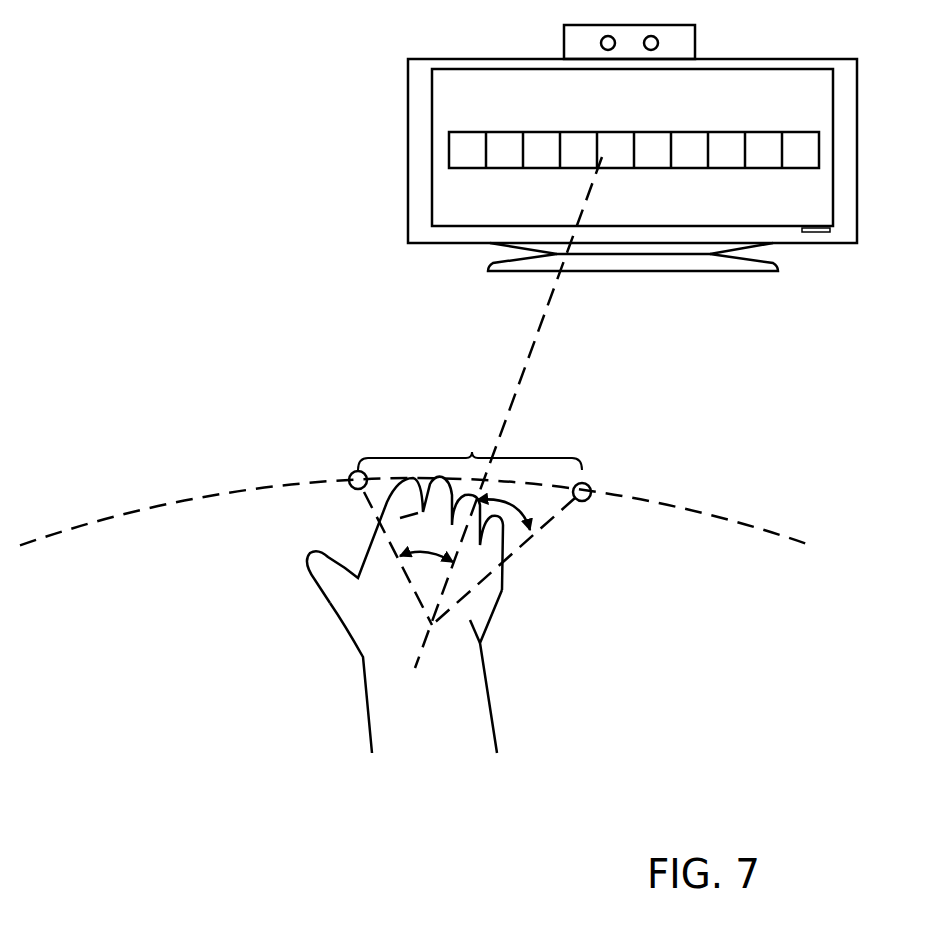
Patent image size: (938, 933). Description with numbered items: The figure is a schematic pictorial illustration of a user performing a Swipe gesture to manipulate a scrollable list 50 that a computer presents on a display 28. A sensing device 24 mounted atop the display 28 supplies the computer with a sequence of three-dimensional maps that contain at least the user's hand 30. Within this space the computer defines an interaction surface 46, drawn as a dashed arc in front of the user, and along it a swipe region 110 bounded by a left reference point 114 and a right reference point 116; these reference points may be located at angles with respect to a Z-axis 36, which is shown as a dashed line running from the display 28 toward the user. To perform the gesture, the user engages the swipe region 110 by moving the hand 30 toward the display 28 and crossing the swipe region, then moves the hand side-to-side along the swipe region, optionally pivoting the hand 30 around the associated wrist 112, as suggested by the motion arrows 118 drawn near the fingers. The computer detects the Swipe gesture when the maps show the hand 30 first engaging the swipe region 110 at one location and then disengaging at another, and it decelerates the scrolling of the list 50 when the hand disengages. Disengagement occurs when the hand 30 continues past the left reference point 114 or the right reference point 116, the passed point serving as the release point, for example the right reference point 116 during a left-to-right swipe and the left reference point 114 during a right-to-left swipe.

The sensing device 24 is at (564, 40).
The display 28 is at (408, 132).
The hand 30 is at (483, 605).
The Z-axis 36 is at (543, 330).
The interaction surface 46 is at (730, 520).
The scrollable list 50 is at (782, 118).
The swipe region 110 is at (470, 448).
The wrist 112 is at (383, 630).
The left reference point 114 is at (356, 490).
The right reference point 116 is at (590, 500).
The finger motion arrows 118 is at (512, 528).